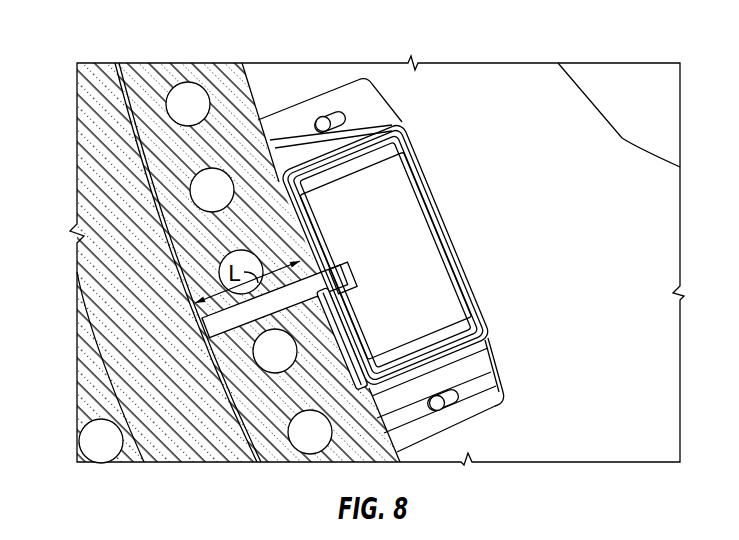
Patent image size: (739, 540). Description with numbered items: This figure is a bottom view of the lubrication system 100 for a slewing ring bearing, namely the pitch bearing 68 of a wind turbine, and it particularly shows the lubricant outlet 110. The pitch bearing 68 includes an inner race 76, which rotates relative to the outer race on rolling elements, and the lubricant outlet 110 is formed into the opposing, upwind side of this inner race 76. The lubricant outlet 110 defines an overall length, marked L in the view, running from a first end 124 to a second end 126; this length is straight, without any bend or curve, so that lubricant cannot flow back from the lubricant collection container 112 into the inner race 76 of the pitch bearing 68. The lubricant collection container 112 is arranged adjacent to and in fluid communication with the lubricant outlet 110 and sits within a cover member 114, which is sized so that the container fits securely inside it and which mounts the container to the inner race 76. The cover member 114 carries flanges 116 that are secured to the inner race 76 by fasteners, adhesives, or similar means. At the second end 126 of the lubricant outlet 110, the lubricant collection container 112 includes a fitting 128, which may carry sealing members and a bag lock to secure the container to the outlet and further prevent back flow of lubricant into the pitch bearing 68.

The pitch bearing 68 is at (121, 53).
The inner race 76 is at (182, 70).
The lubrication system 100 is at (424, 254).
The lubricant outlet 110 is at (235, 345).
The lubricant collection container 112 is at (492, 300).
The cover member 114 is at (493, 330).
The flanges 116 is at (365, 98).
The first end 124 is at (205, 331).
The second end 126 is at (347, 337).
The fitting 128 is at (346, 276).